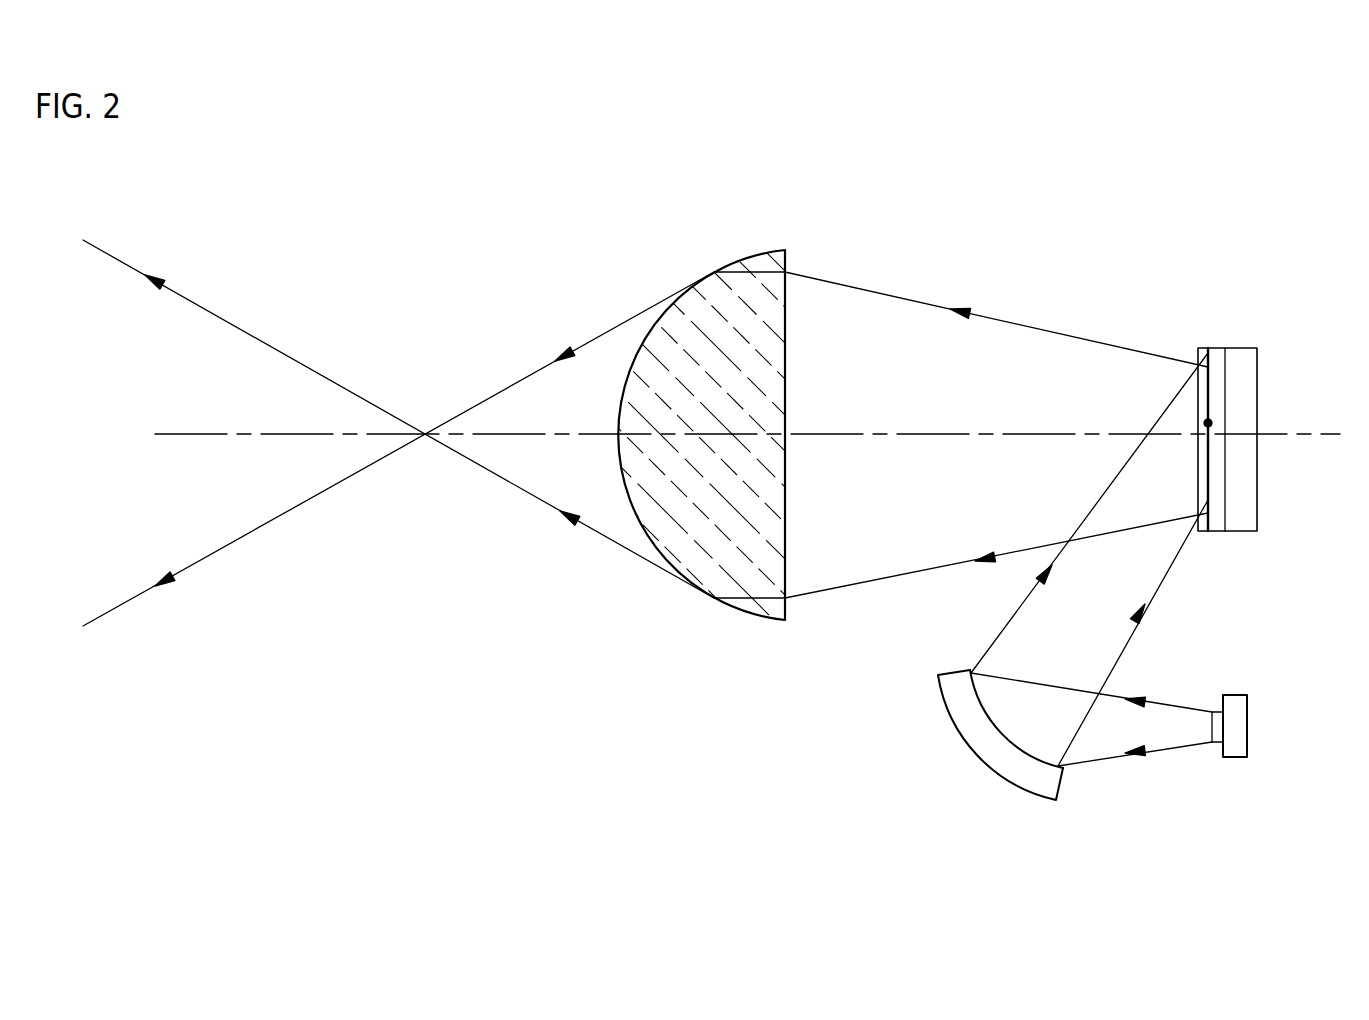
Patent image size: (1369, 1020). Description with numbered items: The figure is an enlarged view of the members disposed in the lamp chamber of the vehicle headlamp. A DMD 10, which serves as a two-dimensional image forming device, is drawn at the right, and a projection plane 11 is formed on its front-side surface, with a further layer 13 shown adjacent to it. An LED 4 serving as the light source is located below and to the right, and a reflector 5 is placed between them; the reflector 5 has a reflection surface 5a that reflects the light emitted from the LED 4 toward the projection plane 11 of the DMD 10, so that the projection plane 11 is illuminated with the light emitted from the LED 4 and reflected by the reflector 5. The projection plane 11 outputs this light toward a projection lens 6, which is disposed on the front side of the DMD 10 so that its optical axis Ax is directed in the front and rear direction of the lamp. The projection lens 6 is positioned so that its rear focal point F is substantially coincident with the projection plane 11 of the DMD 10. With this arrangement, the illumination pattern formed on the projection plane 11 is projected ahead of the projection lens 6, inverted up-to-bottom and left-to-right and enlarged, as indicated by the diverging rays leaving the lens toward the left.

The LED 4 is at (1238, 723).
The reflector 5 is at (936, 745).
The reflection surface 5a is at (998, 723).
The projection lens 6 is at (703, 562).
The DMD 10 is at (1200, 386).
The projection plane 11 is at (1205, 495).
The layer of detector 13 is at (1198, 407).
The rear focal point F is at (1208, 423).
The optical axis Ax is at (732, 433).